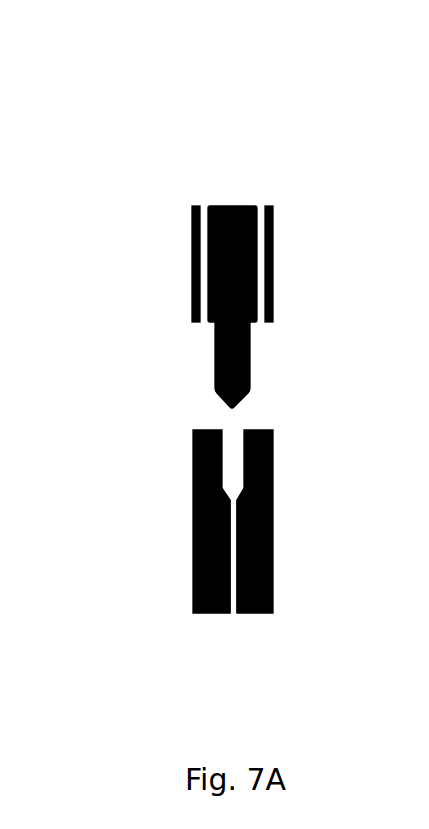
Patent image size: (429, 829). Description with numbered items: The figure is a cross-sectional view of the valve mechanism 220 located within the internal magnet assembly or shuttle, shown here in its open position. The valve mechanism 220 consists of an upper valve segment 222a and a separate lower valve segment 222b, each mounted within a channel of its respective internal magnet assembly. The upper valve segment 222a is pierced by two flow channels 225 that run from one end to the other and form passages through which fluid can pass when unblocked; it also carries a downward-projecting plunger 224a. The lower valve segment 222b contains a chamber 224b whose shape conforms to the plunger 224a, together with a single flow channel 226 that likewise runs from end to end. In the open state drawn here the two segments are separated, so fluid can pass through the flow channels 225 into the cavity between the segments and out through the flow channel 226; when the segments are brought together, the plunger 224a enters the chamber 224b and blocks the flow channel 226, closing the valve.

The valve mechanism 220 is at (309, 518).
The upper valve segment 222a is at (193, 262).
The lower valve segment 222b is at (193, 502).
The plunger 224a is at (215, 345).
The chamber 224b is at (232, 437).
The flow channels 225 is at (263, 199).
The flow channel 226 is at (232, 613).